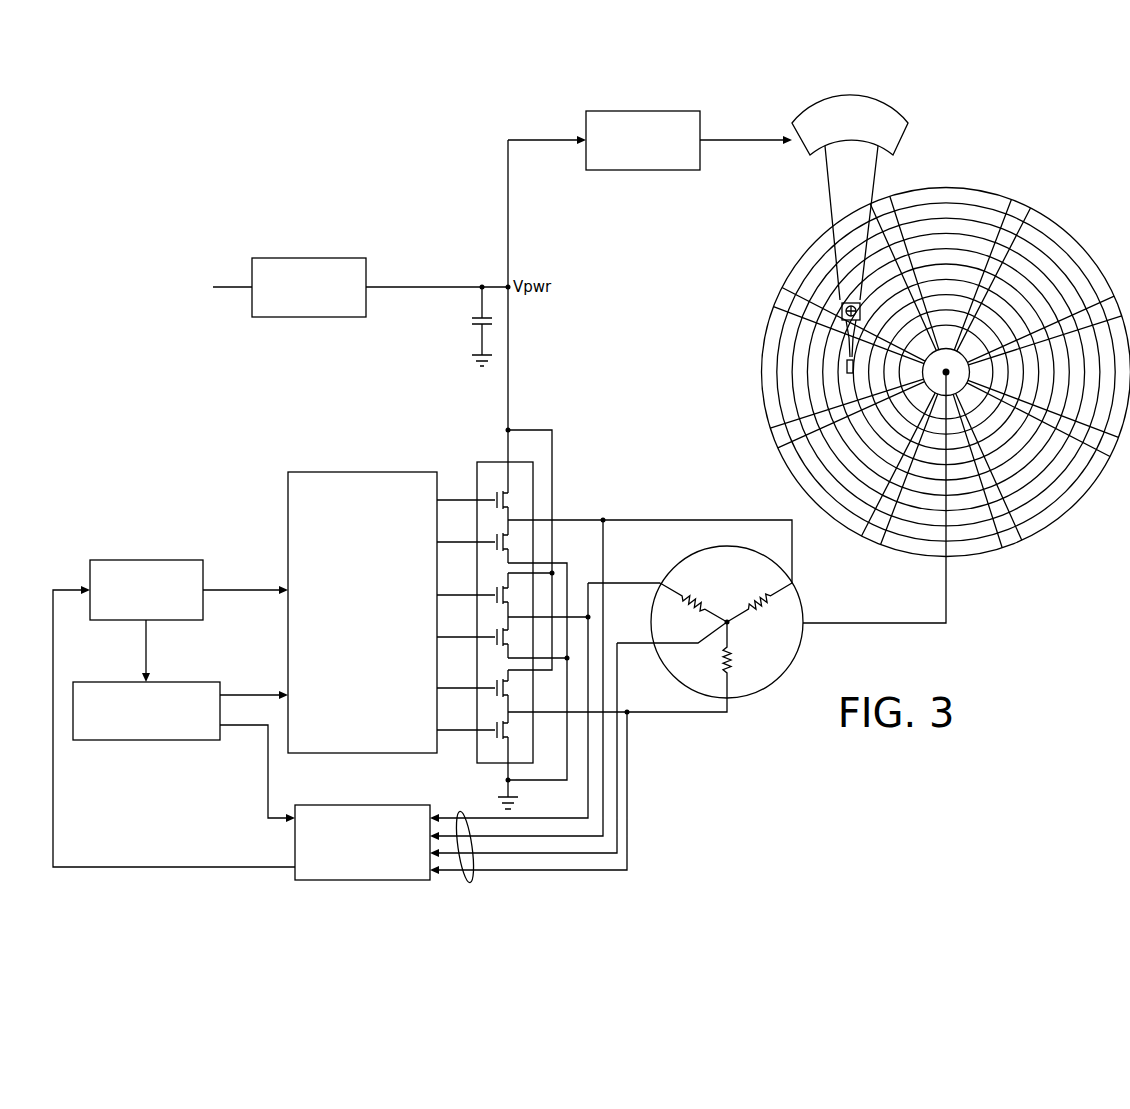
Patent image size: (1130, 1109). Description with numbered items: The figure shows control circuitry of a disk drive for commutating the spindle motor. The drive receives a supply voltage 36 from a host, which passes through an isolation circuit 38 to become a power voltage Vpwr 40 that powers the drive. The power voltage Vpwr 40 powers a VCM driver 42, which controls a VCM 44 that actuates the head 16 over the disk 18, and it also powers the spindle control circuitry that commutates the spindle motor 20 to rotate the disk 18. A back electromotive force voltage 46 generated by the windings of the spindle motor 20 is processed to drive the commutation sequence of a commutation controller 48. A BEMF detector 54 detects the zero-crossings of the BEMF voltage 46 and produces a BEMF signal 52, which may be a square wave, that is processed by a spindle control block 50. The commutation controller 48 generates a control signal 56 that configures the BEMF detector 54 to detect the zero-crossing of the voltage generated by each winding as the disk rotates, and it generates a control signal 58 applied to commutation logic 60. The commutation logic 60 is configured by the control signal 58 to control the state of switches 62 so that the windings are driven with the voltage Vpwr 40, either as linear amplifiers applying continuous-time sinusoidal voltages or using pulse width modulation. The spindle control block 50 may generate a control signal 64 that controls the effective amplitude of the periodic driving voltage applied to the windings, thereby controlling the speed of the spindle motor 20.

The head 16 is at (834, 372).
The disk 18 is at (1076, 226).
The spindle motor 20 is at (798, 644).
The supply voltage 36 is at (230, 287).
The isolation circuit 38 is at (308, 258).
The power voltage Vpwr 40 is at (417, 287).
The VCM driver 42 is at (643, 171).
The VCM 44 is at (908, 136).
The back electromotive force (BEMF) voltage 46 is at (470, 881).
The commutation controller 48 is at (147, 741).
The spindle control block 50 is at (185, 621).
The BEMF signal 52 is at (178, 867).
The BEMF detector 54 is at (363, 805).
The control signal 56 is at (268, 770).
The control signal 58 is at (247, 695).
The commutation logic 60 is at (362, 472).
The switches 62 is at (492, 461).
The control signal 64 is at (240, 590).